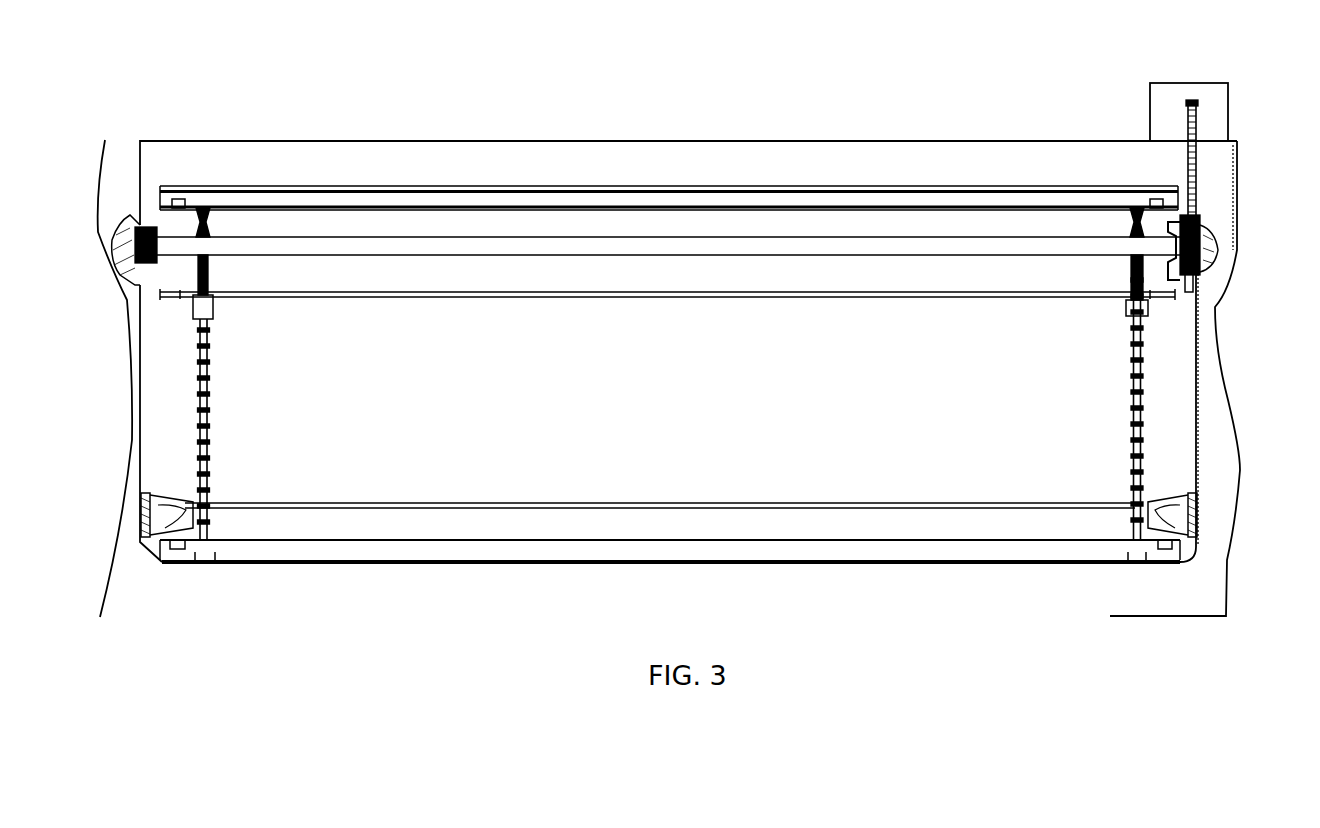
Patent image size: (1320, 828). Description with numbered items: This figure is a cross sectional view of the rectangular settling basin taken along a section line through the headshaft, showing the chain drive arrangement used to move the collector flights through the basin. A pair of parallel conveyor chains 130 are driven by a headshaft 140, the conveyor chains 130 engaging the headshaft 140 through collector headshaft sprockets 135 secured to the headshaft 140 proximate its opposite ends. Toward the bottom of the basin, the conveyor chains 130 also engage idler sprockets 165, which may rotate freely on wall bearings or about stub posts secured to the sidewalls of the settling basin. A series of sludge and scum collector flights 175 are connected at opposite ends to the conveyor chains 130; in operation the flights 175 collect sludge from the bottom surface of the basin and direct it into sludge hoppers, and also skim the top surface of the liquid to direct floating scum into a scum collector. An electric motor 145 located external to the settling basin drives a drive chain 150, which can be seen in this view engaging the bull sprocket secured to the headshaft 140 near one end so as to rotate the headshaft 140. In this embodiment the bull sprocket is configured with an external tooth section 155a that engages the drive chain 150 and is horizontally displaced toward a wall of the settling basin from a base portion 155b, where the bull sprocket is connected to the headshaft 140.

The conveyor chains 130 is at (1133, 410).
The collector headshaft sprockets 135 is at (1130, 226).
The headshaft 140 is at (657, 245).
The electric motor 145 is at (1165, 122).
The drive chain 150 is at (1197, 178).
The external tooth section 155a is at (1196, 282).
The base portion 155b is at (1163, 258).
The idler sprockets 165 is at (212, 502).
The sludge and scum collector flights 175 is at (400, 203).